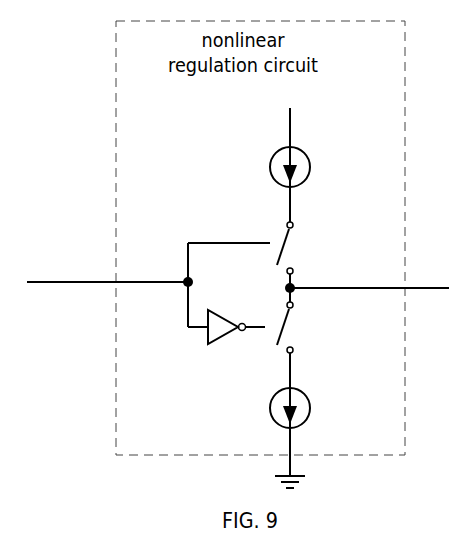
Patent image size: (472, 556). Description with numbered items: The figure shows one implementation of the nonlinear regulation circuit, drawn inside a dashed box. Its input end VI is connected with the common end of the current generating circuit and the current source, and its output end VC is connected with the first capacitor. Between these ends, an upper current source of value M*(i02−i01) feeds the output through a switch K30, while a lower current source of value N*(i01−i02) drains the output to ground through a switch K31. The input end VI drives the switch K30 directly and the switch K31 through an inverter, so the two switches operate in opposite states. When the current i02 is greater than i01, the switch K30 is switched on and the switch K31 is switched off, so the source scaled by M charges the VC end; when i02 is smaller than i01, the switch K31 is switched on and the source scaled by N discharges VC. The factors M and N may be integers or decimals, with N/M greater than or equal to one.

The switch K30 is at (260, 255).
The switch K31 is at (305, 320).
The input end VI is at (110, 285).
The output end (VC end) VC is at (367, 279).
The charging current multiplier M is at (242, 165).
The discharging current multiplier N is at (243, 414).